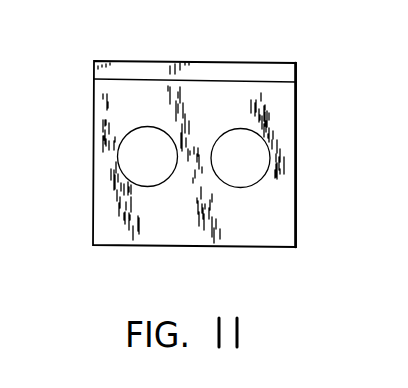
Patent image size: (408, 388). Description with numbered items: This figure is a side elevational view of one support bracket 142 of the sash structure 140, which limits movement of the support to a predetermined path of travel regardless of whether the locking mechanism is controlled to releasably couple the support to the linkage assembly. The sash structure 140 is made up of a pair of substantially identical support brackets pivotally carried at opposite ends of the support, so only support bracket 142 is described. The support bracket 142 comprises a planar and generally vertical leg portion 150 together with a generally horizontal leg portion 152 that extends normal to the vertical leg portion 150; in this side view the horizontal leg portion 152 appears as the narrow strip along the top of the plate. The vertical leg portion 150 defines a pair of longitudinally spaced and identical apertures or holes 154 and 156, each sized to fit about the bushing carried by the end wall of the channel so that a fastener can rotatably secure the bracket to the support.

The sash structure 140 is at (206, 124).
The support bracket 142 is at (298, 102).
The vertical leg portion 150 is at (286, 224).
The horizontal leg portion 152 is at (136, 72).
The aperture 154 is at (265, 160).
The aperture 156 is at (120, 157).